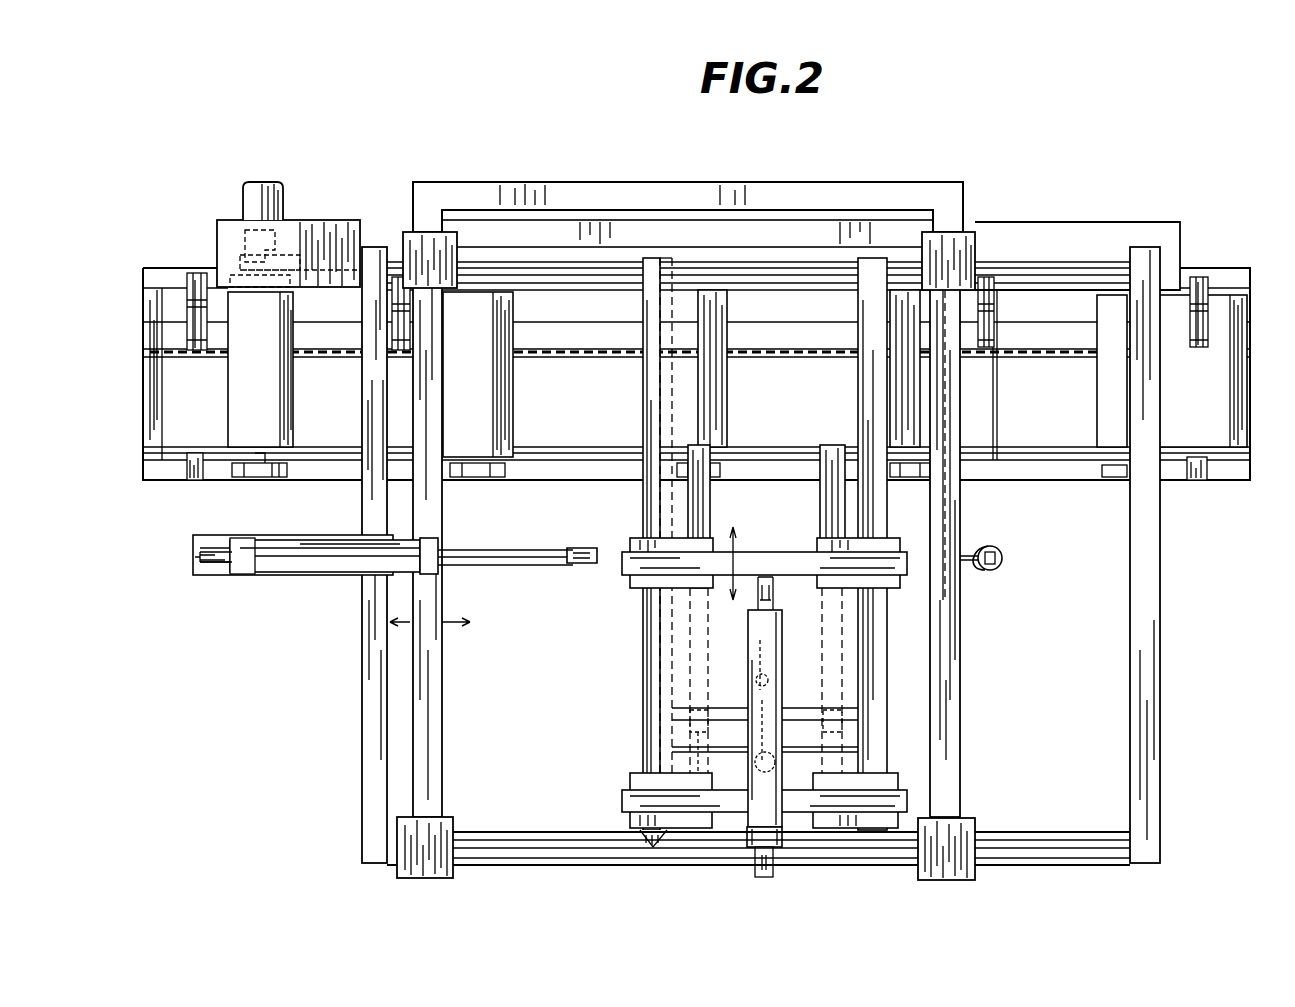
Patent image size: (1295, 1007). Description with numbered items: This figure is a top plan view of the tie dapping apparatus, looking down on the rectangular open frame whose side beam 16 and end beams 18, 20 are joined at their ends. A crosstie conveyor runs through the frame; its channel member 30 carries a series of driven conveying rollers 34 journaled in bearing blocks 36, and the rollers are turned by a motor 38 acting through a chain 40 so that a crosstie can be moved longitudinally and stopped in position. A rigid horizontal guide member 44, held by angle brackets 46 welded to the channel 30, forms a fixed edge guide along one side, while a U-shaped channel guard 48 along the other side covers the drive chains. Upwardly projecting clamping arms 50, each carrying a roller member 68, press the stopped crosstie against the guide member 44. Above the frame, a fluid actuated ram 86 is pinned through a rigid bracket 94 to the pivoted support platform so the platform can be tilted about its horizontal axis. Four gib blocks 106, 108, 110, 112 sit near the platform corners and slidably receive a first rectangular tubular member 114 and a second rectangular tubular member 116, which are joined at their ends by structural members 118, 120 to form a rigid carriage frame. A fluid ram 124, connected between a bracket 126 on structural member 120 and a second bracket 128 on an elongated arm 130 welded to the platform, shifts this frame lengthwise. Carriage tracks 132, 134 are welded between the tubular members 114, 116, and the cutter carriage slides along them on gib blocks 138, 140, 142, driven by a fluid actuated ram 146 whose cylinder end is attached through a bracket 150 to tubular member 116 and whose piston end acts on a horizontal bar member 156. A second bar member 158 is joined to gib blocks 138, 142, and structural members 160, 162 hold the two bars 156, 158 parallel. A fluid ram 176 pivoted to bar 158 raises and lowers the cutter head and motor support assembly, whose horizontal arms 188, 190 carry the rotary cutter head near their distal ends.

The side beam 16 is at (858, 182).
The end beam 18 is at (440, 708).
The end beam 20 is at (960, 493).
The channel member 30 is at (165, 470).
The conveying roller 34 is at (240, 397).
The bearing block 36 is at (255, 477).
The motor 38 is at (248, 188).
The chain 40 is at (230, 240).
The horizontal guide member 44 is at (160, 447).
The angle bracket 46 is at (195, 480).
The channel guard 48 is at (340, 220).
The clamping arm 50 is at (195, 296).
The roller member 68 is at (198, 290).
The fluid actuated ram 86 is at (1002, 558).
The rigid bracket 94 is at (980, 546).
The gib block 106 is at (968, 880).
The gib block 108 is at (440, 878).
The gib block 110 is at (410, 232).
The gib block 112 is at (965, 232).
The first rectangular tubular member 114 is at (776, 255).
The second rectangular tubular member 116 is at (598, 866).
The structural member 118 is at (362, 712).
The structural member 120 is at (1153, 715).
The fluid ram 124 is at (347, 555).
The bracket 126 is at (597, 565).
The second bracket 128 is at (193, 555).
The elongated arm 130 is at (208, 577).
The carriage track 132 is at (645, 675).
The carriage track 134 is at (880, 670).
The gib block 138 is at (634, 773).
The gib block 140 is at (640, 540).
The gib block 142 is at (888, 540).
The fluid actuated ram 146 is at (752, 820).
The bracket 150 is at (762, 877).
The horizontal bar member 156 is at (805, 800).
The second bar member 158 is at (776, 565).
The structural member 160 is at (695, 705).
The structural member 162 is at (830, 632).
The fluid ram 176 is at (765, 700).
The arm 188 is at (705, 490).
The arm 190 is at (830, 500).